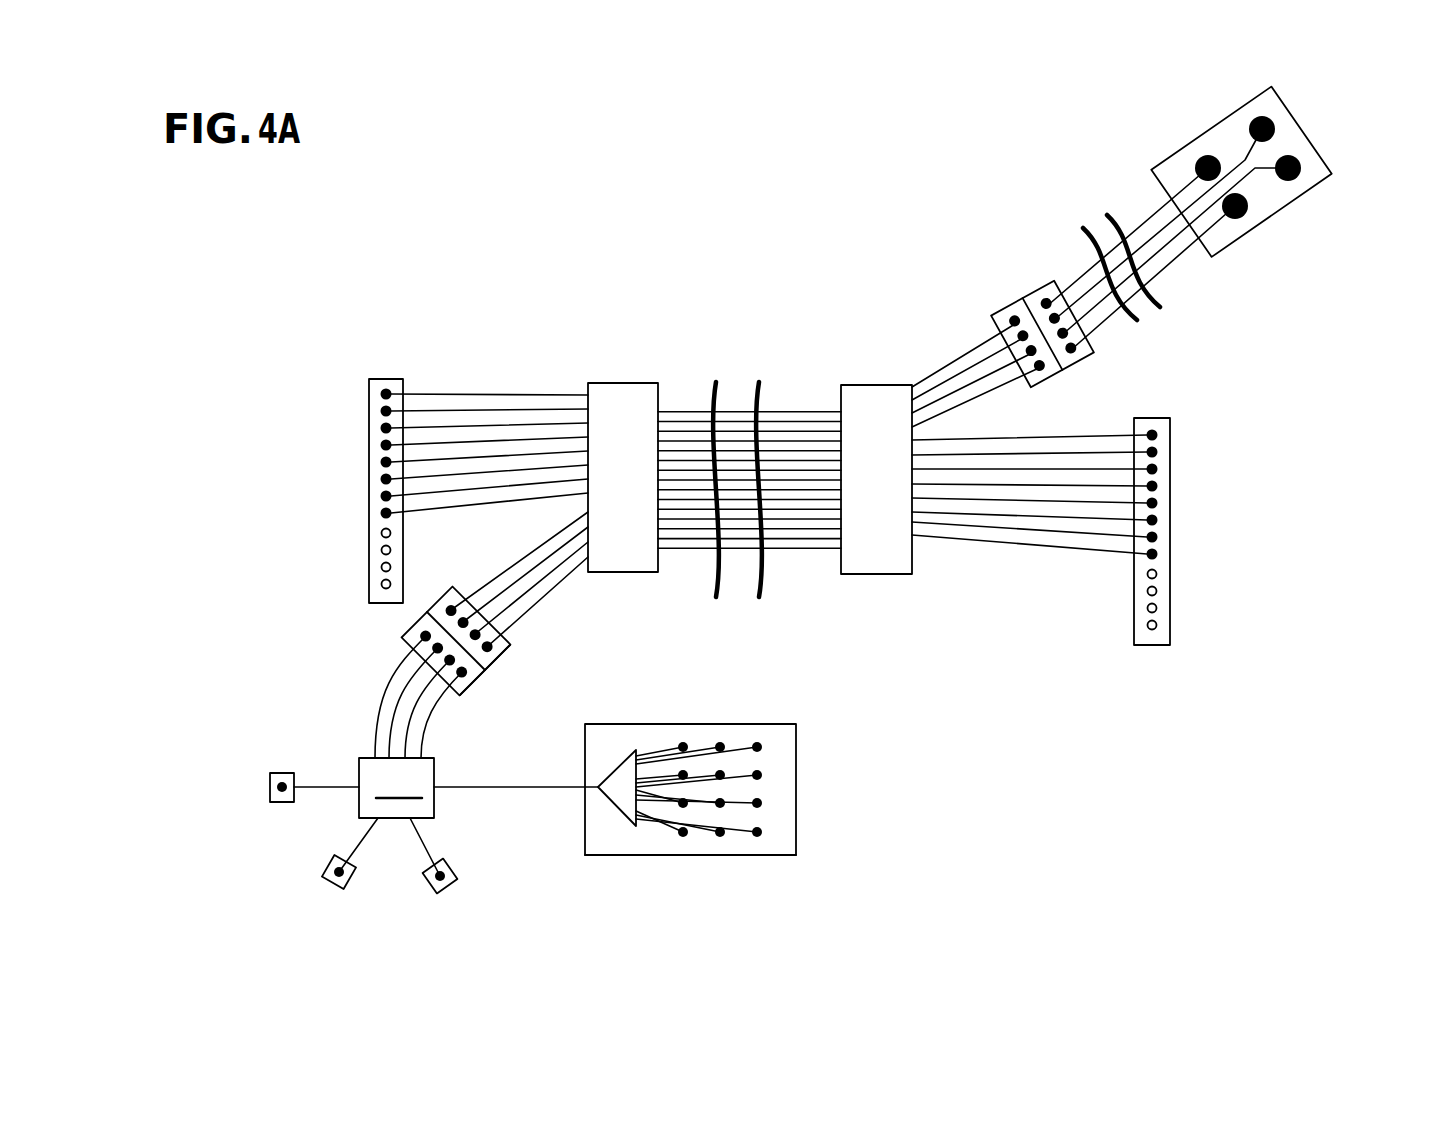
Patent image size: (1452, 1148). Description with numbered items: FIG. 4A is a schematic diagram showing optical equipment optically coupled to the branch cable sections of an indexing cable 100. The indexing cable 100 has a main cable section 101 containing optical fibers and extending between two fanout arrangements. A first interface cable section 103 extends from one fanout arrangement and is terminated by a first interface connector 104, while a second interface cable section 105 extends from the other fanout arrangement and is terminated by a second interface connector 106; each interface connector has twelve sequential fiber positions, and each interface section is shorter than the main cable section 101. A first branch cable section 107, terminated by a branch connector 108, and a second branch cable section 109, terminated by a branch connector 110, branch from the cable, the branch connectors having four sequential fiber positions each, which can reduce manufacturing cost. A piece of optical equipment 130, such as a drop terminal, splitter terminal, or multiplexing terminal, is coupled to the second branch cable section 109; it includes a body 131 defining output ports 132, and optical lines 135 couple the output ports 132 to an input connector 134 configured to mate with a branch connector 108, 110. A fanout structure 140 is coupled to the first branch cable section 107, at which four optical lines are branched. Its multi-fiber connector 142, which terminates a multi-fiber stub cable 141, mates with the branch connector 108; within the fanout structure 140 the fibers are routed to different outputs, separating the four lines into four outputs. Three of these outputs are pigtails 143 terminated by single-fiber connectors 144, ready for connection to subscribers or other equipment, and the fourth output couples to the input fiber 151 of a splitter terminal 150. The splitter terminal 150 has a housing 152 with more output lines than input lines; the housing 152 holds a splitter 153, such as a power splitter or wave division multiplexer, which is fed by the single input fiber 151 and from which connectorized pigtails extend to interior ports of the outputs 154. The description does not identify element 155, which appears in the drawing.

The indexing cable 100 is at (680, 370).
The main cable section 101 is at (778, 410).
The first interface cable section 103 is at (513, 396).
The first interface connector 104 is at (387, 376).
The second interface cable section 105 is at (1033, 545).
The second interface connector 106 is at (1263, 578).
The first branch cable section 107 is at (543, 592).
The branch connector 108 is at (579, 641).
The second branch cable section 109 is at (957, 365).
The branch connector 110 is at (1007, 310).
The optical equipment 130 is at (1288, 240).
The body 131 is at (1313, 168).
The output ports 132 is at (1270, 120).
The input connector 134 is at (1040, 288).
The optical lines 135 is at (1177, 258).
The fanout structure 140 is at (389, 825).
The multi-fiber stub cable 141 is at (385, 698).
The multi-fiber connector 142 is at (473, 686).
The pigtails 143 is at (329, 786).
The single-fiber connectors 144 is at (270, 785).
The splitter terminal 150 is at (712, 873).
The input fiber 151 is at (507, 788).
The housing 152 is at (645, 857).
The splitter 153 is at (620, 785).
The outputs 154 is at (757, 747).
The optical paths 155 is at (735, 750).